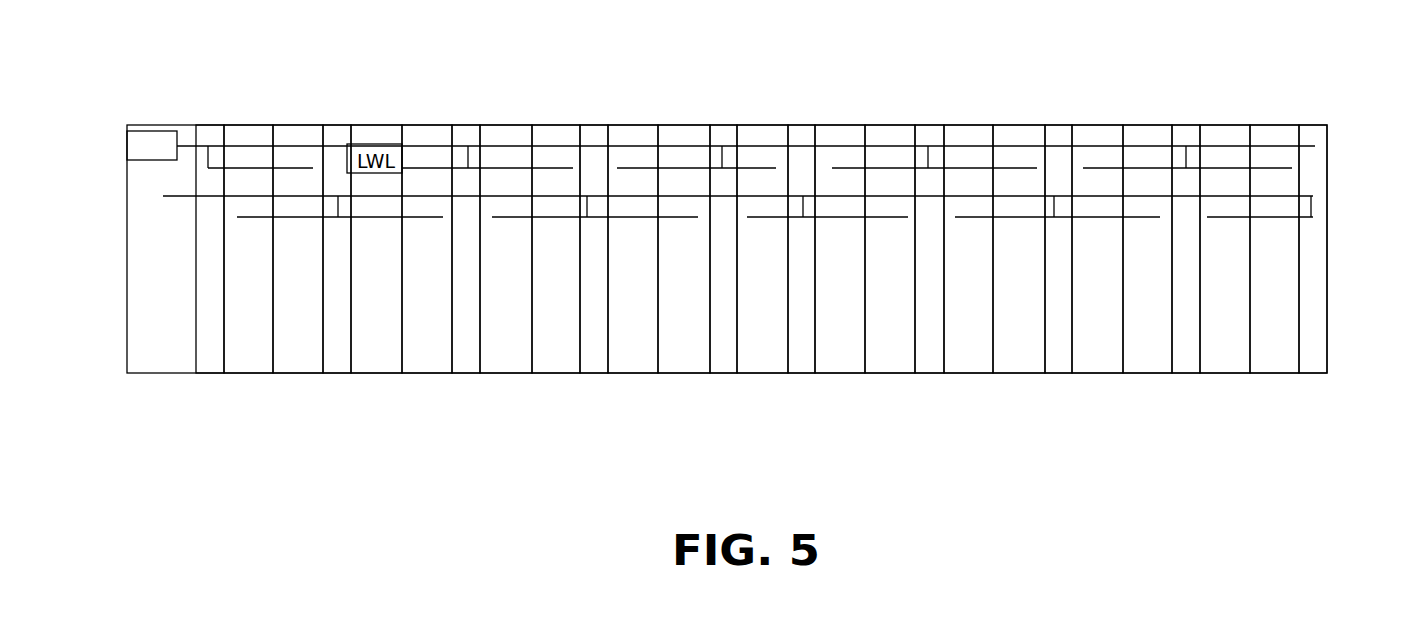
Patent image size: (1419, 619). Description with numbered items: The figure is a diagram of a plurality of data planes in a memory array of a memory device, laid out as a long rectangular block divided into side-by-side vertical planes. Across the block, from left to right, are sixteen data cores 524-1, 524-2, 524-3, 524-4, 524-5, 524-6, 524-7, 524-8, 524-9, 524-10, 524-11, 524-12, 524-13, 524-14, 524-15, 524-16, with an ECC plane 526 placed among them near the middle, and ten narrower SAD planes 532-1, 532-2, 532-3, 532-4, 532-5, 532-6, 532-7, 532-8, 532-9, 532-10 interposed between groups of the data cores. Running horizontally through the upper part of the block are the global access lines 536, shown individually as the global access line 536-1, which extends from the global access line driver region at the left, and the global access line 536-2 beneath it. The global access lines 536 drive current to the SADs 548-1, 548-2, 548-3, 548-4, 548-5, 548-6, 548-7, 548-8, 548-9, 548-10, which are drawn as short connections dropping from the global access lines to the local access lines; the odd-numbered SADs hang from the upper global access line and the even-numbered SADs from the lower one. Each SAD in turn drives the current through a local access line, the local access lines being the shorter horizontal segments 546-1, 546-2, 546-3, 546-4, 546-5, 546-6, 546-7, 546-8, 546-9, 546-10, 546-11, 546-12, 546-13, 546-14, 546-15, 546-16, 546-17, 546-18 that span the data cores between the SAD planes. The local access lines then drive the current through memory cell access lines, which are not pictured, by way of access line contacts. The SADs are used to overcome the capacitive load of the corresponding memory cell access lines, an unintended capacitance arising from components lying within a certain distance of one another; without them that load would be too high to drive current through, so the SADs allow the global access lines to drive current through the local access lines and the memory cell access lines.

The global access lines 536 is at (142, 176).
The global access line 536-1 is at (197, 145).
The global access line 536-2 is at (178, 199).
The local access line 546-1 is at (313, 168).
The local access line 546-2 is at (257, 217).
The local access line 546-3 is at (379, 218).
The local access line 546-4 is at (418, 168).
The local access line 546-5 is at (513, 168).
The local access line 546-6 is at (558, 217).
The local access line 546-7 is at (633, 217).
The local access line 546-8 is at (640, 168).
The local access line 546-9 is at (765, 168).
The local access line 546-10 is at (767, 217).
The local access line 546-11 is at (838, 217).
The local access line 546-12 is at (888, 168).
The local access line 546-13 is at (977, 168).
The local access line 546-14 is at (1022, 217).
The local access line 546-15 is at (1102, 217).
The local access line 546-16 is at (1098, 168).
The local access line 546-17 is at (1218, 168).
The local access line 546-18 is at (1262, 217).
The SAD 548-1 is at (222, 161).
The SAD 548-2 is at (338, 208).
The SAD 548-3 is at (469, 160).
The SAD 548-4 is at (587, 208).
The SAD 548-5 is at (723, 162).
The SAD 548-6 is at (803, 206).
The SAD 548-7 is at (930, 160).
The SAD 548-8 is at (1054, 208).
The SAD 548-9 is at (1183, 160).
The SAD 548-10 is at (1308, 208).
The data core 524-1 is at (243, 373).
The data core 524-2 is at (297, 373).
The data core 524-3 is at (374, 373).
The data core 524-4 is at (432, 373).
The data core 524-5 is at (503, 373).
The data core 524-6 is at (557, 373).
The data core 524-7 is at (632, 373).
The data core 524-8 is at (688, 373).
The data core 524-9 is at (838, 373).
The data core 524-10 is at (898, 373).
The data core 524-11 is at (972, 373).
The data core 524-12 is at (1022, 373).
The data core 524-13 is at (1097, 373).
The data core 524-14 is at (1145, 373).
The data core 524-15 is at (1225, 373).
The data core 524-16 is at (1272, 373).
The ECC plane 526 is at (763, 373).
The SAD plane 532-1 is at (206, 373).
The SAD plane 532-2 is at (338, 373).
The SAD plane 532-3 is at (468, 373).
The SAD plane 532-4 is at (595, 373).
The SAD plane 532-5 is at (727, 373).
The SAD plane 532-6 is at (803, 373).
The SAD plane 532-7 is at (933, 373).
The SAD plane 532-8 is at (1055, 373).
The SAD plane 532-9 is at (1183, 373).
The SAD plane 532-10 is at (1310, 373).